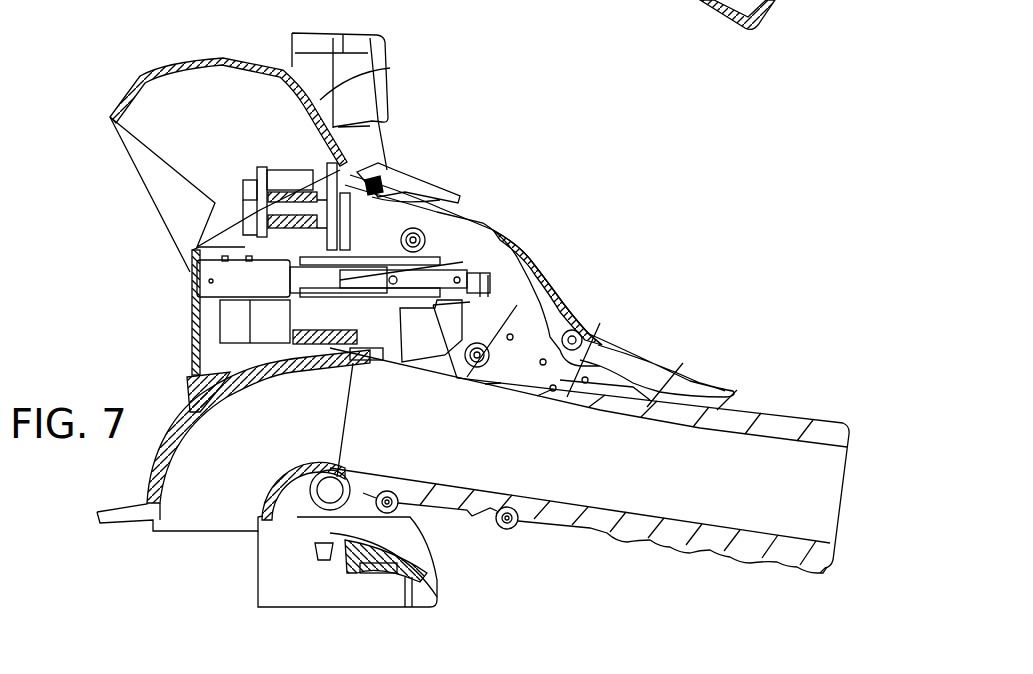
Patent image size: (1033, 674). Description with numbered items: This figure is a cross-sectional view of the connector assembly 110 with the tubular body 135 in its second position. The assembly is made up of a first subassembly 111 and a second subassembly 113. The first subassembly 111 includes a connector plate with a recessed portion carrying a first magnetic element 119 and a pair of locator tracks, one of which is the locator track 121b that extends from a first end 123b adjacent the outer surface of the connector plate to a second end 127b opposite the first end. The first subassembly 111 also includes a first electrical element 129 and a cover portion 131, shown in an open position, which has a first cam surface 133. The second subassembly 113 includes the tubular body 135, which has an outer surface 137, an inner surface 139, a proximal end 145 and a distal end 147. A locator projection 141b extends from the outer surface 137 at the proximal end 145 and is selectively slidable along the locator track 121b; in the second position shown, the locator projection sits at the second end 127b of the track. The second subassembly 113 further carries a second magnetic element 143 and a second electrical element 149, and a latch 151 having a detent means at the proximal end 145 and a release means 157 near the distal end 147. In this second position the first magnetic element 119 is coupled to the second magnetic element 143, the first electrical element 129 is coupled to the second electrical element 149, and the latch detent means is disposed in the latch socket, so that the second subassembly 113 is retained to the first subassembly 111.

The connector assembly 110 is at (614, 124).
The first subassembly 111 is at (238, 45).
The second subassembly 113 is at (539, 211).
The first magnetic element 119 is at (323, 167).
The locator track 121b is at (320, 527).
The first end 123b is at (430, 550).
The second end 127b is at (303, 537).
The first electrical element 129 is at (225, 282).
The cover portion 131 is at (200, 78).
The first cam surface 133 is at (390, 68).
The tubular body 135 is at (663, 547).
The outer surface 137 is at (530, 527).
The inner surface 139 is at (772, 527).
The locator projection 141b is at (300, 470).
The second magnetic element 143 is at (407, 183).
The proximal end 145 is at (352, 407).
The distal end 147 is at (837, 527).
The second electrical element 149 is at (425, 305).
The latch 151 is at (547, 263).
The release means 157 is at (673, 377).